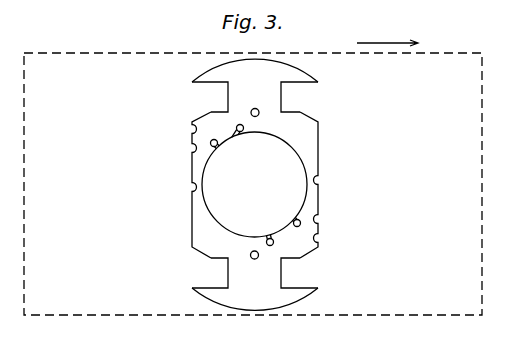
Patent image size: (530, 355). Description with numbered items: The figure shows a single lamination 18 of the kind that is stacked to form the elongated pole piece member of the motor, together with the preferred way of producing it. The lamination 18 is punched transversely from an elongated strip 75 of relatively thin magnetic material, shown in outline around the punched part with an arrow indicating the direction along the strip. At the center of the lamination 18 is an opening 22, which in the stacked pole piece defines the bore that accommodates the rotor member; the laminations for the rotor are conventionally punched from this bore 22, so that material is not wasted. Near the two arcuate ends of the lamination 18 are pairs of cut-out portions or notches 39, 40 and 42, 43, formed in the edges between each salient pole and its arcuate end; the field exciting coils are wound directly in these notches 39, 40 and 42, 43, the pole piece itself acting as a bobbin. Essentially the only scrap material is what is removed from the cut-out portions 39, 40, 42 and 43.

The lamination 18 is at (321, 141).
The opening 22 is at (202, 207).
The cut-out portion 39 is at (228, 101).
The cut-out portion 40 is at (281, 103).
The cut-out portion 42 is at (228, 270).
The cut-out portion 43 is at (282, 268).
The elongated strip 75 is at (450, 53).